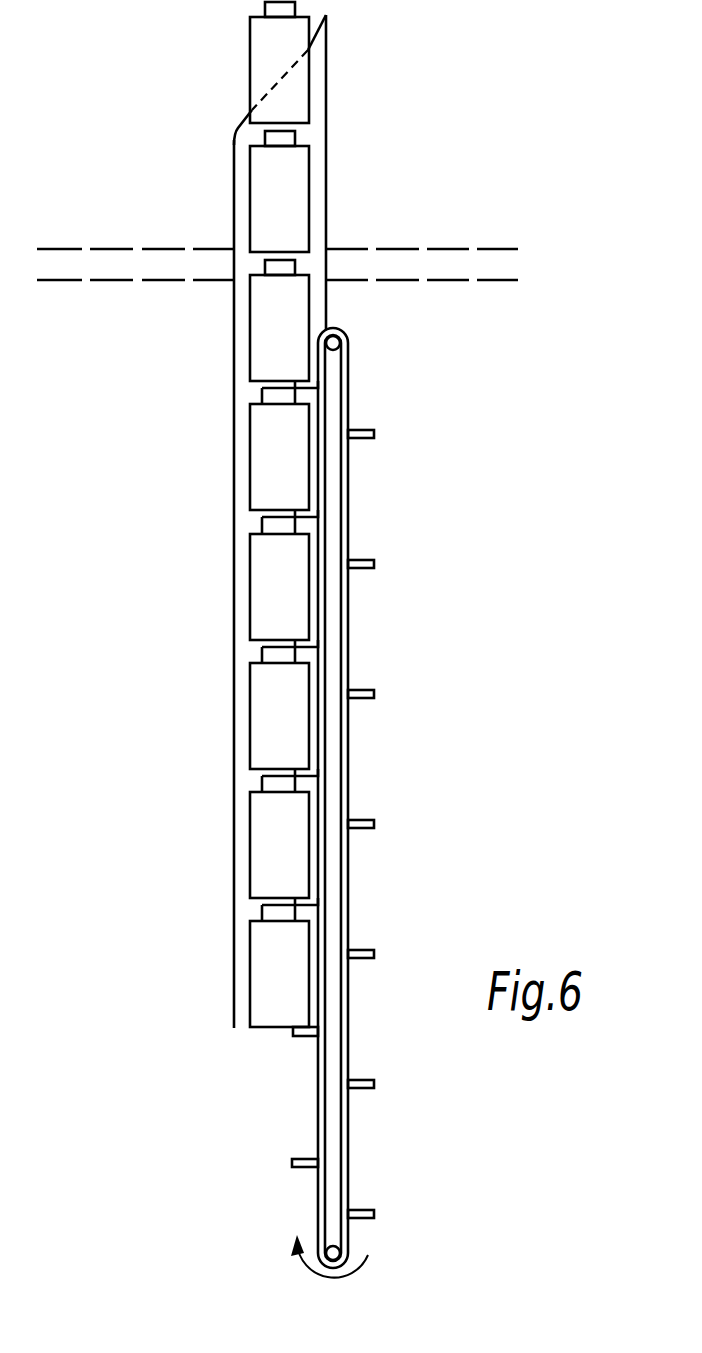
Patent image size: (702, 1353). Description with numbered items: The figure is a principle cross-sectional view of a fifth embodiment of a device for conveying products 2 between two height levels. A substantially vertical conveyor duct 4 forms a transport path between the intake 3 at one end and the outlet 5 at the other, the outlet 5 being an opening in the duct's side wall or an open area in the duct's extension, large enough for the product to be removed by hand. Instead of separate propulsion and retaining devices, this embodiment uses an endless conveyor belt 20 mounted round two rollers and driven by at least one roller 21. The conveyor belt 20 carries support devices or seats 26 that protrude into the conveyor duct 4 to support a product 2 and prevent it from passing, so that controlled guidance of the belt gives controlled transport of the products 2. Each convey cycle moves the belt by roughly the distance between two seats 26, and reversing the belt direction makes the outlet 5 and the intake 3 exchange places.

The product 2 is at (260, 342).
The intake 3 is at (243, 1040).
The conveyor duct 4 is at (233, 527).
The outlet 5 is at (240, 128).
The conveyor belt 20 is at (355, 513).
The roller 21 is at (340, 345).
The seat 26 is at (298, 1036).